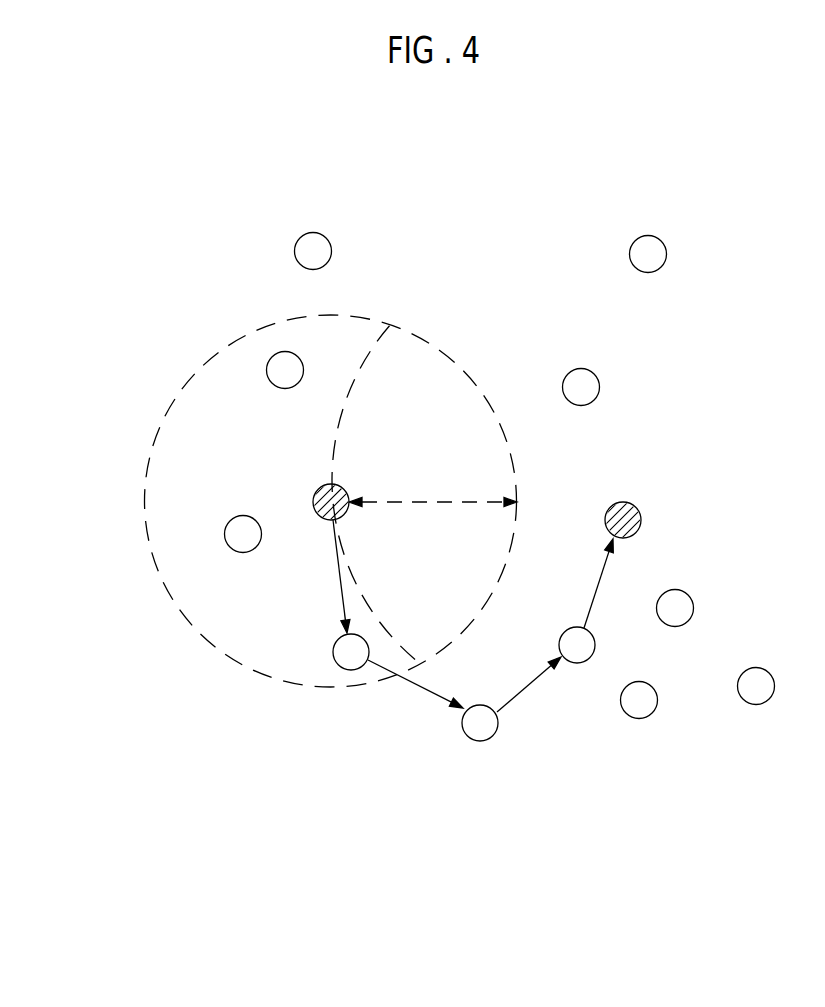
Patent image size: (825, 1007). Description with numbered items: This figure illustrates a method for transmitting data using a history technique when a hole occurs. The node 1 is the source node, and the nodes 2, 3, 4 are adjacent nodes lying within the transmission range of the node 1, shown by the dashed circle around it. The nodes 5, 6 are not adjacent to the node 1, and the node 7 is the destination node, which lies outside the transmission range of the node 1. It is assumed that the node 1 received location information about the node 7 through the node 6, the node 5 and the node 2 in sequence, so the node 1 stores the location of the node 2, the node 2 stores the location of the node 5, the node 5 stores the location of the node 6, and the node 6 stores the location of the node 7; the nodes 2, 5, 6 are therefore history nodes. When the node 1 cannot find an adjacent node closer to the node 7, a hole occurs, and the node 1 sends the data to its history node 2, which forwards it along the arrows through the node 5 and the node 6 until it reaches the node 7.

The node 1 is at (313, 488).
The node 2 is at (350, 671).
The node 3 is at (225, 532).
The node 4 is at (268, 358).
The node 5 is at (480, 742).
The node 6 is at (577, 664).
The node 7 is at (643, 515).